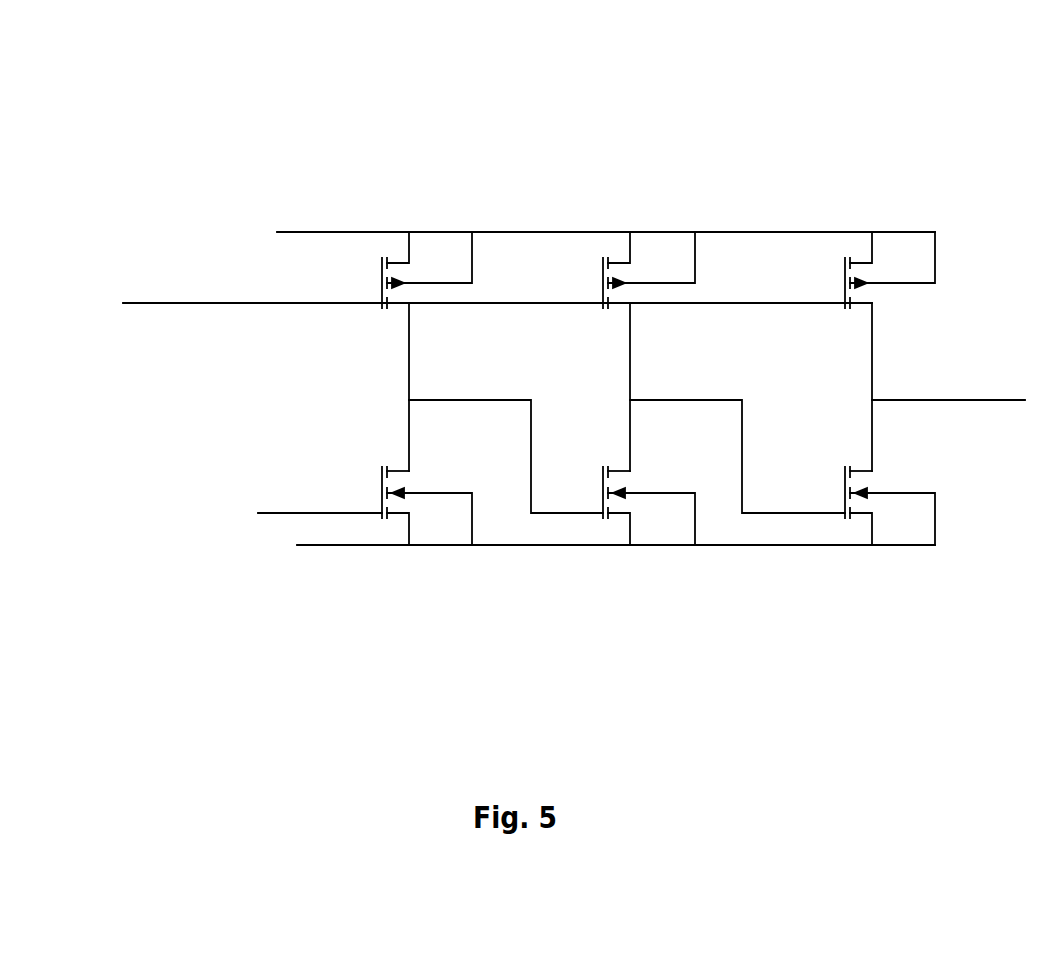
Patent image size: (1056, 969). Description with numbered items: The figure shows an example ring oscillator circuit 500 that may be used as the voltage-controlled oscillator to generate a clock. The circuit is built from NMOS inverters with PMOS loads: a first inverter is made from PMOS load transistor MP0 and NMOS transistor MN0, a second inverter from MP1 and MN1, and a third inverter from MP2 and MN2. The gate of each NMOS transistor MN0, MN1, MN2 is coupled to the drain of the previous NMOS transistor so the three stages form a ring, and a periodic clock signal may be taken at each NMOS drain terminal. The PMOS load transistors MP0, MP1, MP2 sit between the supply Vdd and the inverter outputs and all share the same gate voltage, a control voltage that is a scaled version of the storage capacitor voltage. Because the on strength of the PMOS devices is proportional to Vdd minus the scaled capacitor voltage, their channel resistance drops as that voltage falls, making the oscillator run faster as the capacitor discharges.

The ring oscillator circuit 500 is at (852, 52).
The PMOS load transistor MP0 is at (419, 258).
The PMOS load transistor MP1 is at (642, 258).
The PMOS load transistor MP2 is at (883, 258).
The NMOS transistor MN0 is at (419, 484).
The NMOS transistor MN1 is at (642, 484).
The NMOS transistor MN2 is at (883, 484).